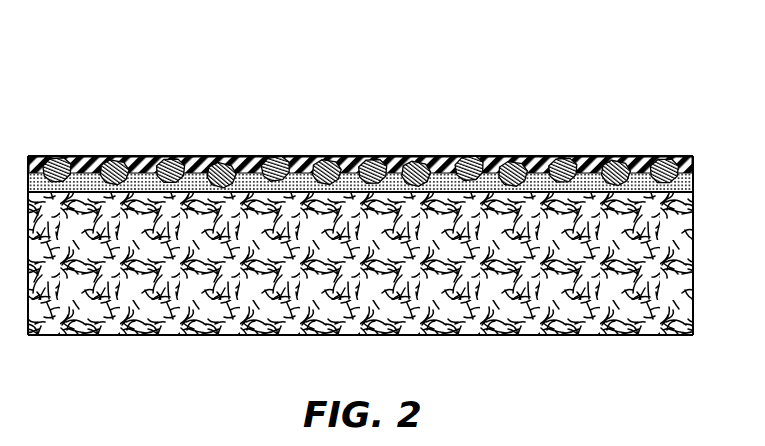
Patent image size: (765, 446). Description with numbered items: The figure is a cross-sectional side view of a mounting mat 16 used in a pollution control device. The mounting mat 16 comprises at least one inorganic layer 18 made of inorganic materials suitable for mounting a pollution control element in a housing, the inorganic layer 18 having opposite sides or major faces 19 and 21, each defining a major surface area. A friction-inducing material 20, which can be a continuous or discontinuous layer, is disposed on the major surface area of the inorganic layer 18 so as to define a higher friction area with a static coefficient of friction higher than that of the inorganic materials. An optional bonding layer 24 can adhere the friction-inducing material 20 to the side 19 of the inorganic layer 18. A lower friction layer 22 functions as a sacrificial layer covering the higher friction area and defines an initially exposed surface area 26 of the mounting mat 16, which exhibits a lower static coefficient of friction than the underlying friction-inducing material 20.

The mounting mat 16 is at (382, 196).
The inorganic layer 18 is at (670, 270).
The side or major face 19 is at (293, 191).
The friction-inducing material 20 is at (110, 163).
The side or major face 21 is at (188, 338).
The lower friction layer 22 is at (197, 162).
The bonding layer 24 is at (588, 166).
The exposed surface area 26 is at (403, 163).